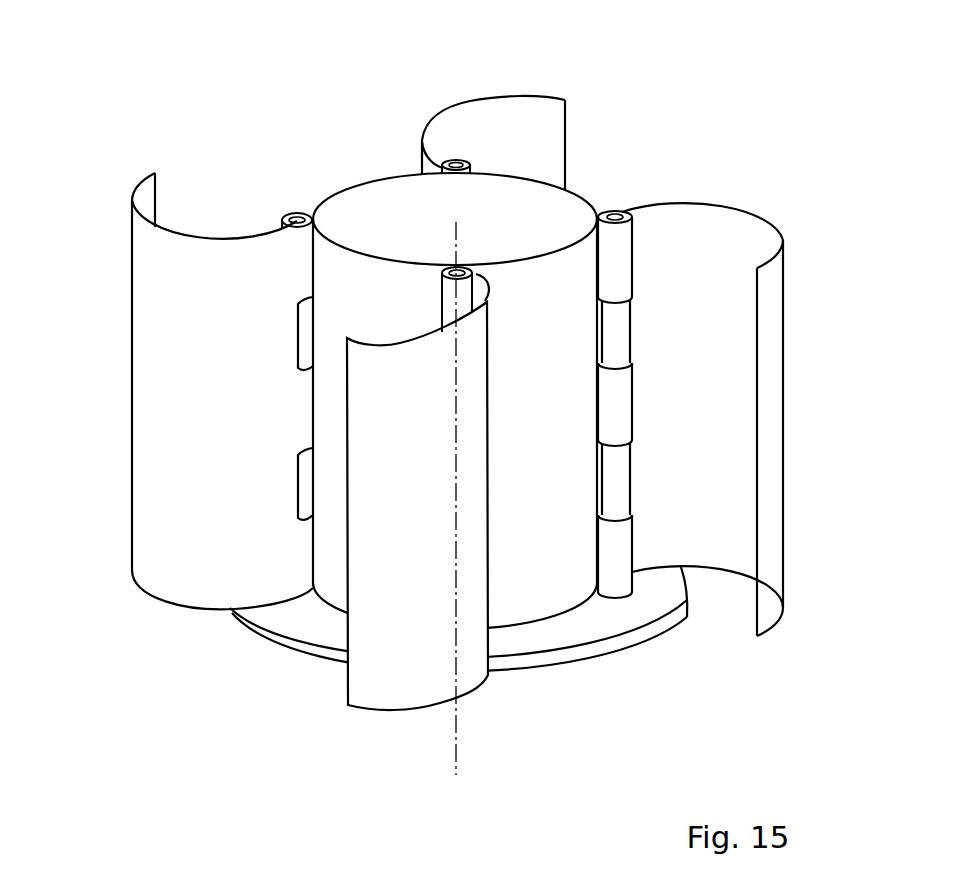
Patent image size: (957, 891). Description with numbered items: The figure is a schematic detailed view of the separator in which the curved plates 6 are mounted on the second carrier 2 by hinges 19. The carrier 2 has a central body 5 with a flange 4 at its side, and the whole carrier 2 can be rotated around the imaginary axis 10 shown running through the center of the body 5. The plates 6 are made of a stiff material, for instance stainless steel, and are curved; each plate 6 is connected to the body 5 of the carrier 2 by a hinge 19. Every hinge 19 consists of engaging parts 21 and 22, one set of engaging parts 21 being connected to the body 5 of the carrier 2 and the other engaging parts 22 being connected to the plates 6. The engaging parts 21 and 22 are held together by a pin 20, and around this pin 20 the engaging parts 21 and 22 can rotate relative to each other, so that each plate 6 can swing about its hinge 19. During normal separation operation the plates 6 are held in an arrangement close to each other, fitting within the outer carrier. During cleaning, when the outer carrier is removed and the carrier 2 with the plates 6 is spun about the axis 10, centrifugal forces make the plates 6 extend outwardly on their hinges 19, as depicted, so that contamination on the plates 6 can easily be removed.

The second carrier 2 is at (362, 84).
The flange 4 is at (317, 625).
The central body 5 is at (577, 197).
The plate 6 is at (547, 97).
The imaginary axis 10 is at (455, 232).
The hinge 19 is at (461, 161).
The pin 20 is at (452, 160).
The engaging part 21 is at (306, 334).
The engaging part 22 is at (305, 412).